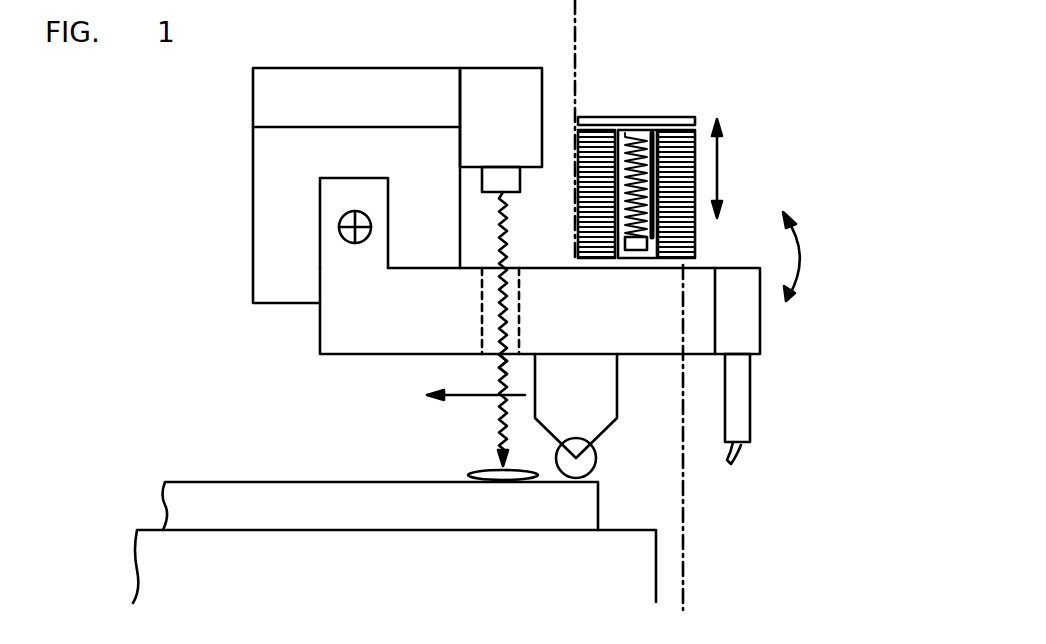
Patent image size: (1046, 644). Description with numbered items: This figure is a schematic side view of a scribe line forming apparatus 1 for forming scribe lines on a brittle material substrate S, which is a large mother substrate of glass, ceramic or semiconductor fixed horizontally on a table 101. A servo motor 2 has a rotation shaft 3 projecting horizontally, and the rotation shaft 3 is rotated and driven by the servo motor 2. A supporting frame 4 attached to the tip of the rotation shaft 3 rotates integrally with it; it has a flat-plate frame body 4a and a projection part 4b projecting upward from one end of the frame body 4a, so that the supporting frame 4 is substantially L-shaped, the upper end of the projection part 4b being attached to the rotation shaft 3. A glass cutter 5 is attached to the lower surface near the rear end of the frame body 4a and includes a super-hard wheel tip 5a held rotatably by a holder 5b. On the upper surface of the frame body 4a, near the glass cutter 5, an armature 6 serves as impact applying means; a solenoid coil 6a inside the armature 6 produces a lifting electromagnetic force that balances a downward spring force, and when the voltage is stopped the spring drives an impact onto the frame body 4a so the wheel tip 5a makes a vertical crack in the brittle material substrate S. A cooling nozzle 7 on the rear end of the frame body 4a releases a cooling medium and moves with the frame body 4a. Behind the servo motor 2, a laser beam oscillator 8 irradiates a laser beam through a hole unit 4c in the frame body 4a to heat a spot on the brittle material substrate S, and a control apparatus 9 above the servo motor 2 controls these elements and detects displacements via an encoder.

The scribe line forming apparatus 1 is at (381, 40).
The servo motor 2 is at (270, 185).
The rotation shaft 3 is at (340, 222).
The supporting frame 4 is at (355, 352).
The frame body 4a is at (407, 346).
The projection part 4b is at (338, 314).
The hole unit 4c is at (512, 272).
The glass cutter 5 is at (609, 416).
The wheel tip 5a is at (592, 463).
The holder 5b is at (600, 408).
The armature 6 is at (689, 167).
The solenoid coil 6a is at (651, 134).
The cooling nozzle 7 is at (743, 392).
The laser beam oscillator 8 is at (483, 84).
The control apparatus 9 is at (270, 103).
The brittle material substrate S is at (167, 502).
The table 101 is at (608, 537).